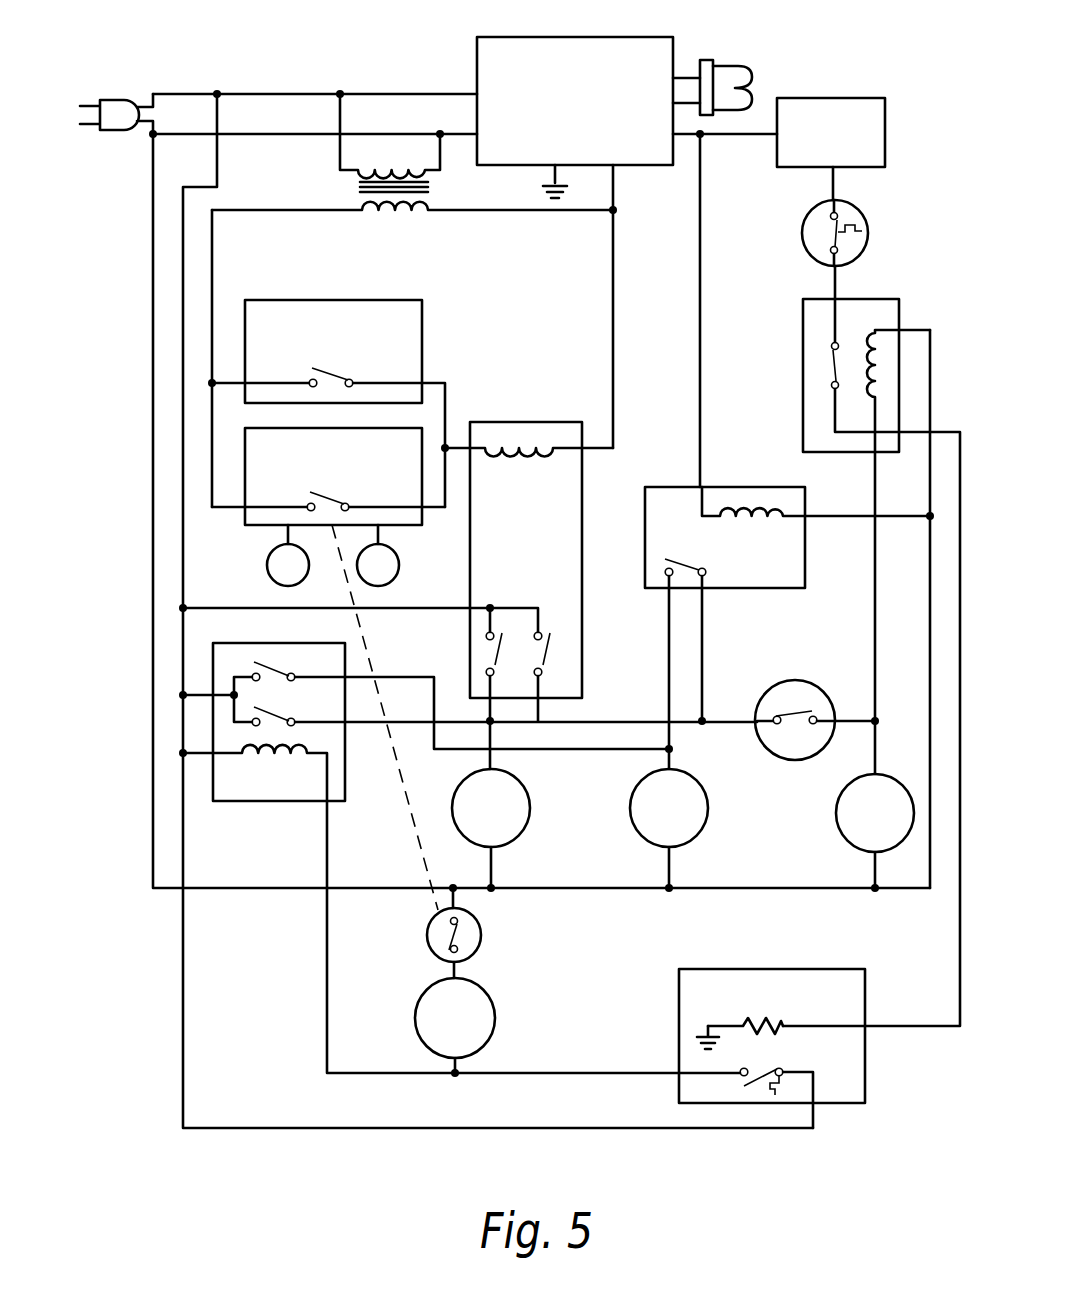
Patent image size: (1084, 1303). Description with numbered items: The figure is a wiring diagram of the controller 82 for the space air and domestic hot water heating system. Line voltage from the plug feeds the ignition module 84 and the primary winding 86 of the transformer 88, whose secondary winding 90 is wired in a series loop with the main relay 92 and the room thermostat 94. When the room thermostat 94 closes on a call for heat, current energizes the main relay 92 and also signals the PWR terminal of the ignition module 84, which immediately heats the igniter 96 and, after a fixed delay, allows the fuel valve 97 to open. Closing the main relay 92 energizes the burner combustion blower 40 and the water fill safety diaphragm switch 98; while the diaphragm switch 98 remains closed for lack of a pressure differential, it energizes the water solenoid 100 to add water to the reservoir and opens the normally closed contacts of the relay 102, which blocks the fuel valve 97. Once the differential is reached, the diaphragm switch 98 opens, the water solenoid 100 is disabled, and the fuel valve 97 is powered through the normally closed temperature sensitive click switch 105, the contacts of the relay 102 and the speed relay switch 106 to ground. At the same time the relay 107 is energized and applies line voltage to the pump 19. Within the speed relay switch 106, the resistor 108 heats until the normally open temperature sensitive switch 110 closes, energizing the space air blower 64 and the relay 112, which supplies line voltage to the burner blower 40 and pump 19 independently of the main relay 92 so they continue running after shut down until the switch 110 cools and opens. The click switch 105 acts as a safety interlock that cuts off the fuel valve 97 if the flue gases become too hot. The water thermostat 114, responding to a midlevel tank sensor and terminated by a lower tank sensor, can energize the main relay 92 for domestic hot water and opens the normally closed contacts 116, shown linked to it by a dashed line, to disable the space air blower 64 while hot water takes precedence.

The controller 82 is at (262, 1158).
The ignition module 84 is at (536, 36).
The primary winding 86 is at (390, 168).
The transformer 88 is at (357, 193).
The secondary winding 90 is at (388, 211).
The main relay 92 is at (530, 422).
The room thermostat 94 is at (290, 300).
The igniter 96 is at (734, 62).
The fuel valve 97 is at (832, 98).
The diaphragm switch 98 is at (824, 668).
The water solenoid 100 is at (836, 813).
The relay 102 is at (803, 315).
The temperature sensitive click switch 105 is at (802, 230).
The speed relay switch 106 is at (760, 969).
The relay 107 is at (722, 487).
The resistor 108 is at (767, 1034).
The temperature sensitive switch 110 is at (760, 1084).
The relay 112 is at (290, 803).
The water thermostat 114 is at (262, 527).
The normally closed contacts 116 is at (482, 935).
The pump 19 is at (697, 783).
The burner combustion blower 40 is at (531, 814).
The space air blower 64 is at (502, 992).